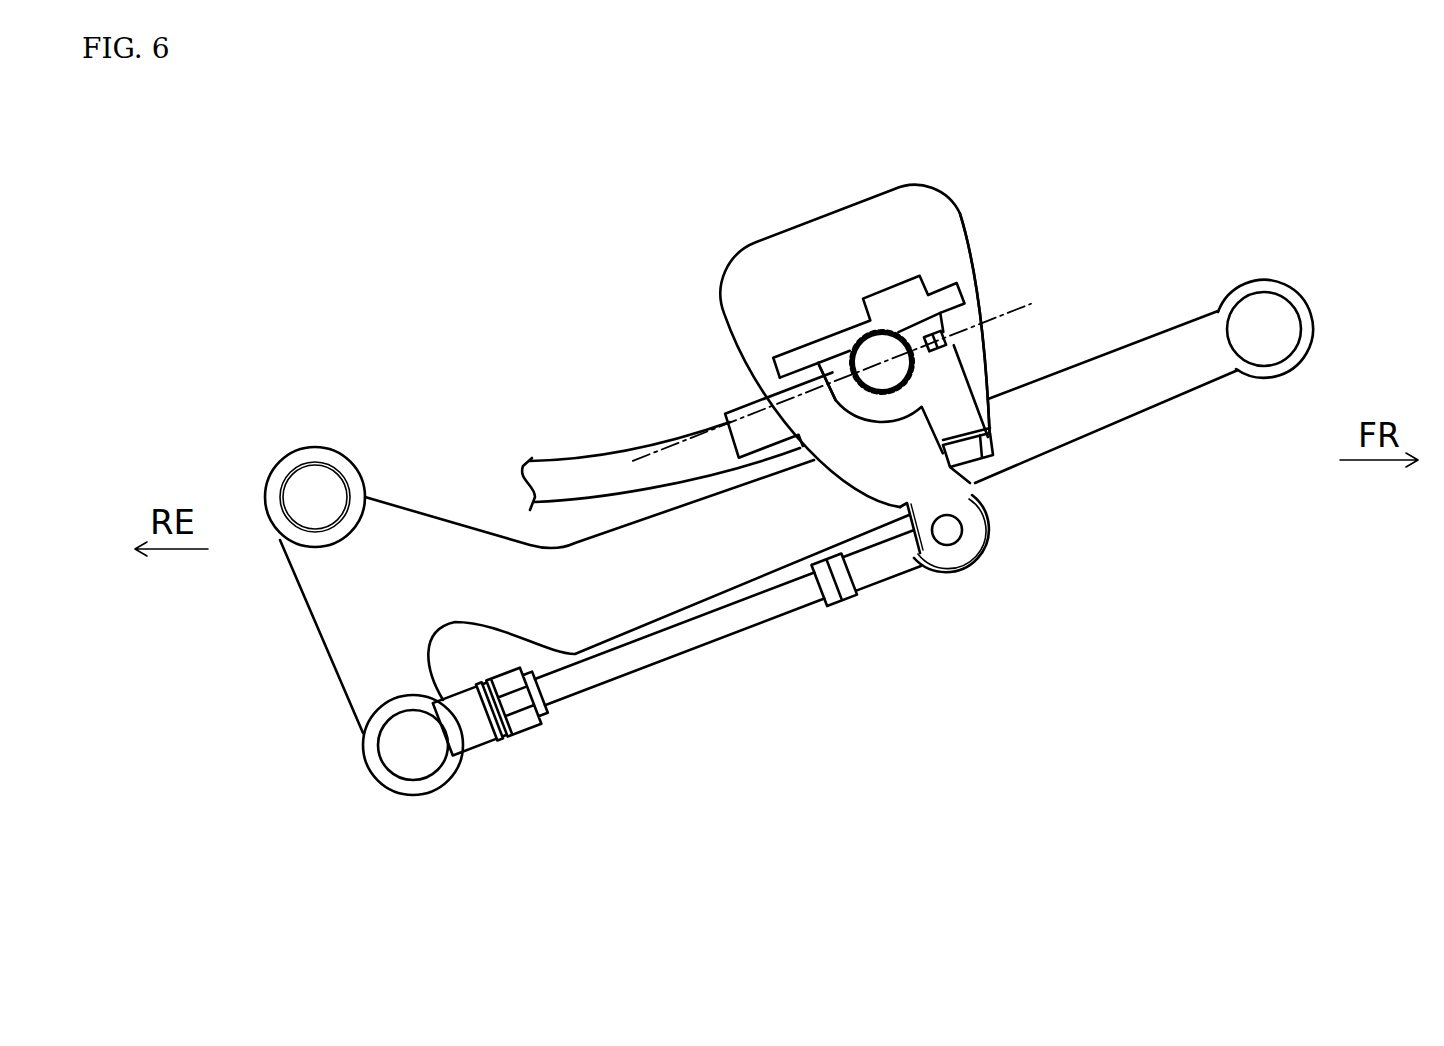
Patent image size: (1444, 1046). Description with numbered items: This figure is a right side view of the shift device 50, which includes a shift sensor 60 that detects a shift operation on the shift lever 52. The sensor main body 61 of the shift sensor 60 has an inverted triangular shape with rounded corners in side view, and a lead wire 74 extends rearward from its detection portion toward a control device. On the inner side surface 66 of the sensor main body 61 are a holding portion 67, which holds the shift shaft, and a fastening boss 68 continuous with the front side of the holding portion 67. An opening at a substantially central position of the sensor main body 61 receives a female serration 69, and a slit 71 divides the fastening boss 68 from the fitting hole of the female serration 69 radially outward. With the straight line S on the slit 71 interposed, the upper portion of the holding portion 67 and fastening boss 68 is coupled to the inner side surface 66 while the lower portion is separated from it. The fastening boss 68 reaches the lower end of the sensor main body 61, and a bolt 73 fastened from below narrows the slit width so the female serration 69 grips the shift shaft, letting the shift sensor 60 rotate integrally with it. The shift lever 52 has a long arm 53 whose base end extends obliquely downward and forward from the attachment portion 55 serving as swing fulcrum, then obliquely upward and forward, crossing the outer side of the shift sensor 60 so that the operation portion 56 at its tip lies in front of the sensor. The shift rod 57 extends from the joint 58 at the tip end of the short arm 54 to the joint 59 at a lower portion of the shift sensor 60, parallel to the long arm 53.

The shift device 50 is at (205, 192).
The shift lever 52 is at (1143, 449).
The long arm 53 is at (782, 540).
The short arm 54 is at (335, 667).
The attachment portion 55 is at (310, 448).
The operation portion 56 is at (1314, 321).
The shift rod 57 is at (733, 634).
The joint 58 is at (417, 795).
The joint 59 is at (977, 572).
The shift sensor 60 is at (903, 162).
The sensor main body 61 is at (977, 253).
The inner side surface 66 is at (777, 277).
The holding portion 67 is at (848, 330).
The fastening boss 68 is at (950, 397).
The female serration 69 is at (848, 385).
The slit 71 is at (952, 347).
The bolt 73 is at (973, 474).
The lead wire 74 is at (607, 455).
The straight line S is at (657, 448).